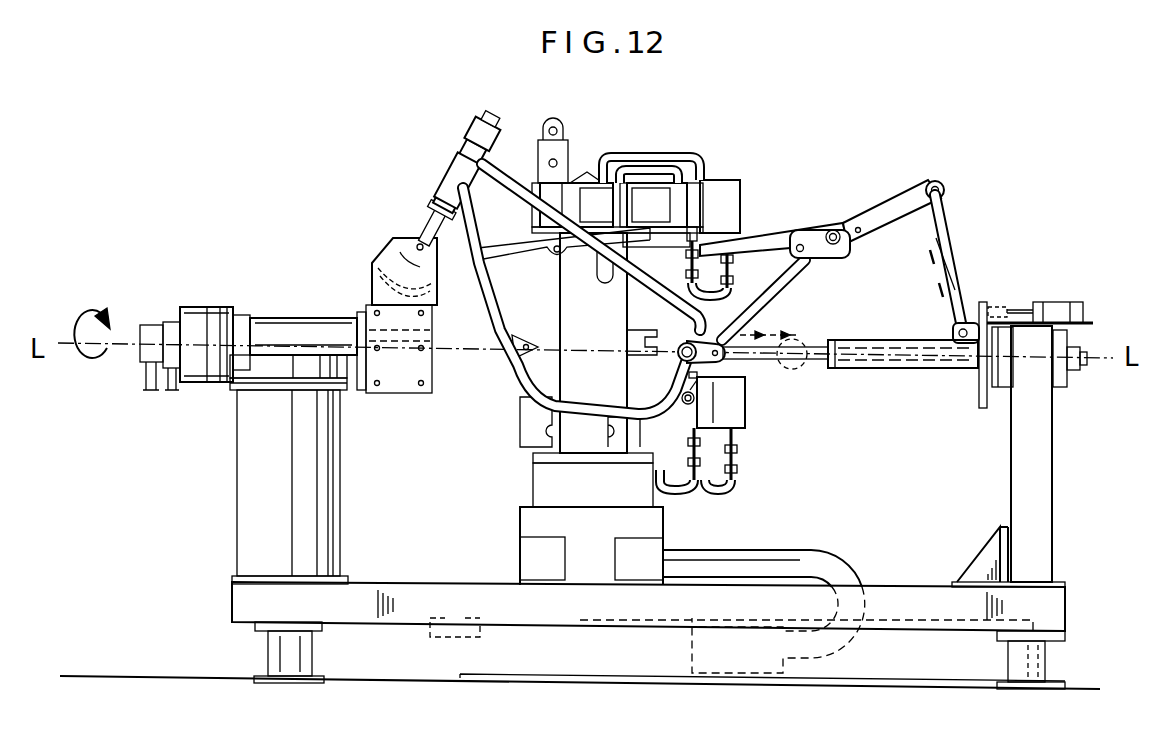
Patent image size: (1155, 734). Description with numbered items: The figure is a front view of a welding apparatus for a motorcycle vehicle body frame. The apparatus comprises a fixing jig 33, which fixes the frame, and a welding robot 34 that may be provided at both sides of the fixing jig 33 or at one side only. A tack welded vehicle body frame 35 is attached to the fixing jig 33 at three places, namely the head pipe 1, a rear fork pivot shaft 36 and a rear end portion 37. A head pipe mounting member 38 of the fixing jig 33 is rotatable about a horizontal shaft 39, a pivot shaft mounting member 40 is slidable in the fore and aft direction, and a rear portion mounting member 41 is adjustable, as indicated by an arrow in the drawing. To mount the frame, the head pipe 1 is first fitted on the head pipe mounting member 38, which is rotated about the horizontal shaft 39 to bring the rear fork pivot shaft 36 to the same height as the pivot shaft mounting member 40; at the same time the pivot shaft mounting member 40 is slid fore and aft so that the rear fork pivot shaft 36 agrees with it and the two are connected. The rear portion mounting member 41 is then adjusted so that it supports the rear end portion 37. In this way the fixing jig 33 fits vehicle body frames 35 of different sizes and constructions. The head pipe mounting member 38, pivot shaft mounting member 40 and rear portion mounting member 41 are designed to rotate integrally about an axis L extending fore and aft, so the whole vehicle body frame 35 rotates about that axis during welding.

The head pipe 1 is at (447, 162).
The fixing jig 33 is at (413, 562).
The welding robot 34 is at (700, 137).
The vehicle body frame 35 is at (789, 214).
The rear fork pivot shaft 36 is at (717, 362).
The rear end portion 37 is at (931, 180).
The head pipe mounting member 38 is at (486, 122).
The horizontal shaft 39 is at (418, 244).
The pivot shaft mounting member 40 is at (775, 362).
The rear portion mounting member 41 is at (947, 230).